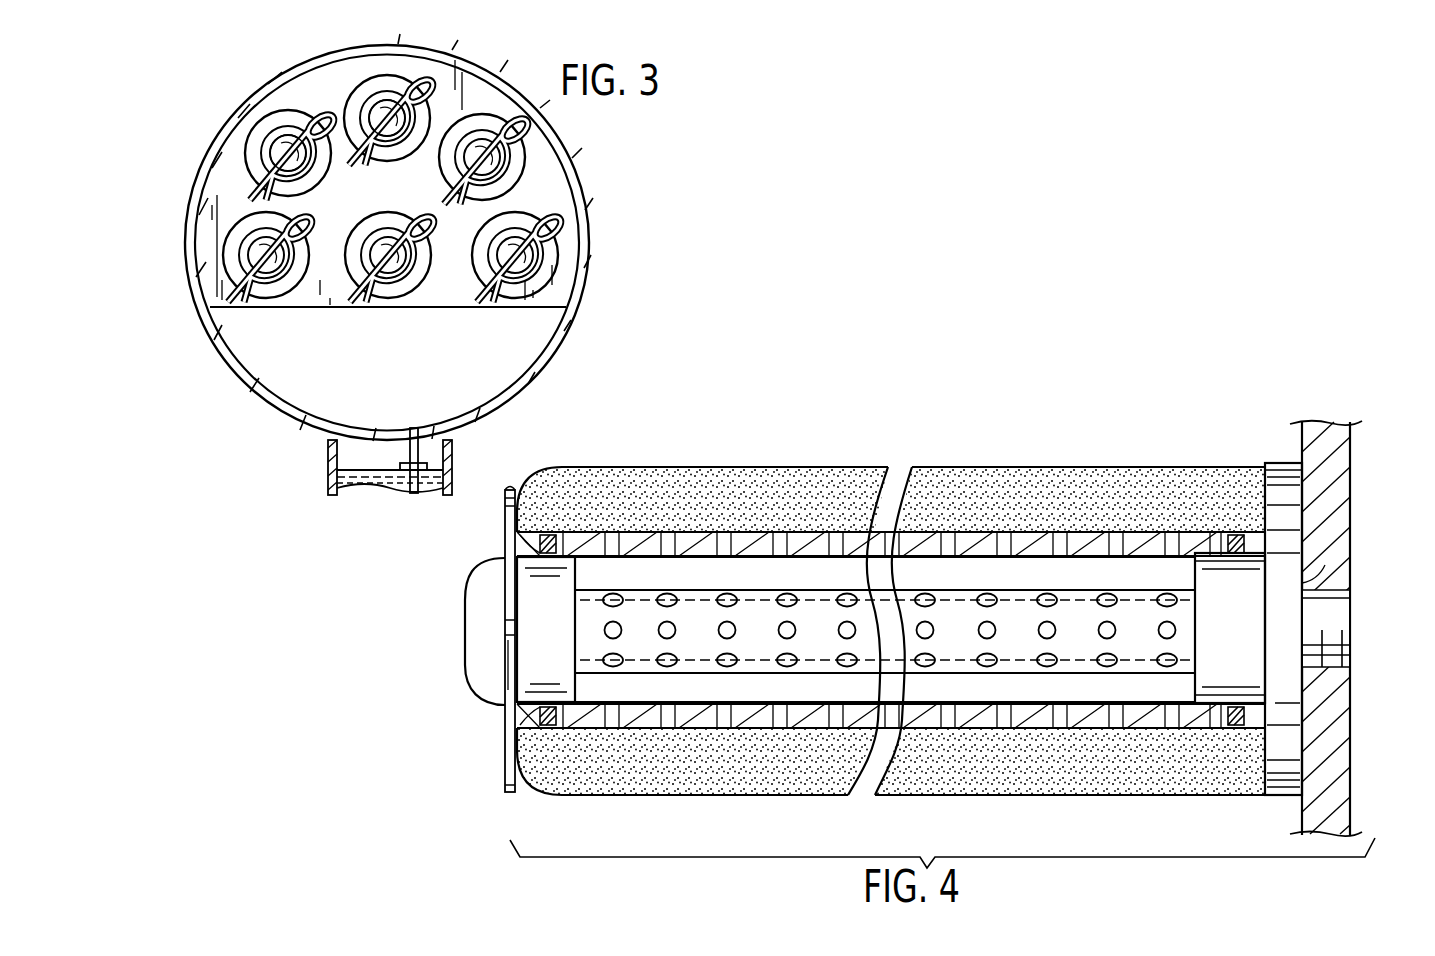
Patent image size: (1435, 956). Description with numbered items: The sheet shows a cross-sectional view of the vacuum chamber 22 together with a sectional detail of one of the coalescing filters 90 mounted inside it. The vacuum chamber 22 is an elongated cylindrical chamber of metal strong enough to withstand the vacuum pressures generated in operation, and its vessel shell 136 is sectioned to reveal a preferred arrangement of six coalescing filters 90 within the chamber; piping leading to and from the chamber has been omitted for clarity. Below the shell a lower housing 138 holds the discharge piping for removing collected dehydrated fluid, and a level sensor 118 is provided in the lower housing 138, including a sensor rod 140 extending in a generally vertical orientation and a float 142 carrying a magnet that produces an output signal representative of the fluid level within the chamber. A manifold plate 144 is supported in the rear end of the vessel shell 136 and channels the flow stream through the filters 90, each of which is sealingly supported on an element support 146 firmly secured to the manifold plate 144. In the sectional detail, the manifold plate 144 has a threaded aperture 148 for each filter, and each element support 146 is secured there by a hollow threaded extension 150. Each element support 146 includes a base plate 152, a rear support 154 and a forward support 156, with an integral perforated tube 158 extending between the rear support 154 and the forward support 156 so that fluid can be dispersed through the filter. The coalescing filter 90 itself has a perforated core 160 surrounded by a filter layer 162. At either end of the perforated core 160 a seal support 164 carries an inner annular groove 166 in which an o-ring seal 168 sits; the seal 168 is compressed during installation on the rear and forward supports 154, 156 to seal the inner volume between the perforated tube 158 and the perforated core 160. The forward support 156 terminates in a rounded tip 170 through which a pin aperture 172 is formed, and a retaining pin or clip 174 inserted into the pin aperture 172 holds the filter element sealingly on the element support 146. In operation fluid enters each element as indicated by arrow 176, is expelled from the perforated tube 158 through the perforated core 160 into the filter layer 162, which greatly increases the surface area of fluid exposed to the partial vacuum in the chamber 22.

In FIG. 3, the vacuum chamber 22 is at (600, 200).
In FIG. 3, the coalescing filter 90 is at (405, 72).
In FIG. 4, the coalescing filter 90 is at (995, 455).
In FIG. 3, the level sensor 118 is at (430, 482).
In FIG. 3, the vessel shell 136 is at (568, 165).
In FIG. 3, the lower housing 138 is at (330, 474).
In FIG. 3, the sensor rod 140 is at (418, 430).
In FIG. 3, the float 142 is at (405, 465).
In FIG. 3, the manifold plate 144 is at (233, 182).
In FIG. 4, the manifold plate 144 is at (1332, 465).
In FIG. 3, the element support 146 is at (385, 118).
In FIG. 4, the element support 146 is at (450, 677).
In FIG. 4, the threaded aperture 148 is at (1320, 583).
In FIG. 4, the hollow threaded extension 150 is at (1342, 613).
In FIG. 4, the base plate 152 is at (1288, 790).
In FIG. 4, the rear support 154 is at (1211, 639).
In FIG. 4, the forward support 156 is at (528, 641).
In FIG. 4, the perforated tube 158 is at (697, 665).
In FIG. 4, the perforated core 160 is at (790, 722).
In FIG. 4, the filter layer 162 is at (823, 783).
In FIG. 4, the seal support 164 is at (567, 532).
In FIG. 4, the inner annular groove 166 is at (535, 550).
In FIG. 4, the seal 168 is at (548, 545).
In FIG. 4, the rounded tip 170 is at (465, 600).
In FIG. 4, the pin aperture 172 is at (507, 628).
In FIG. 4, the retaining pin or clip 174 is at (506, 652).
In FIG. 4, the arrow 176 is at (1395, 612).